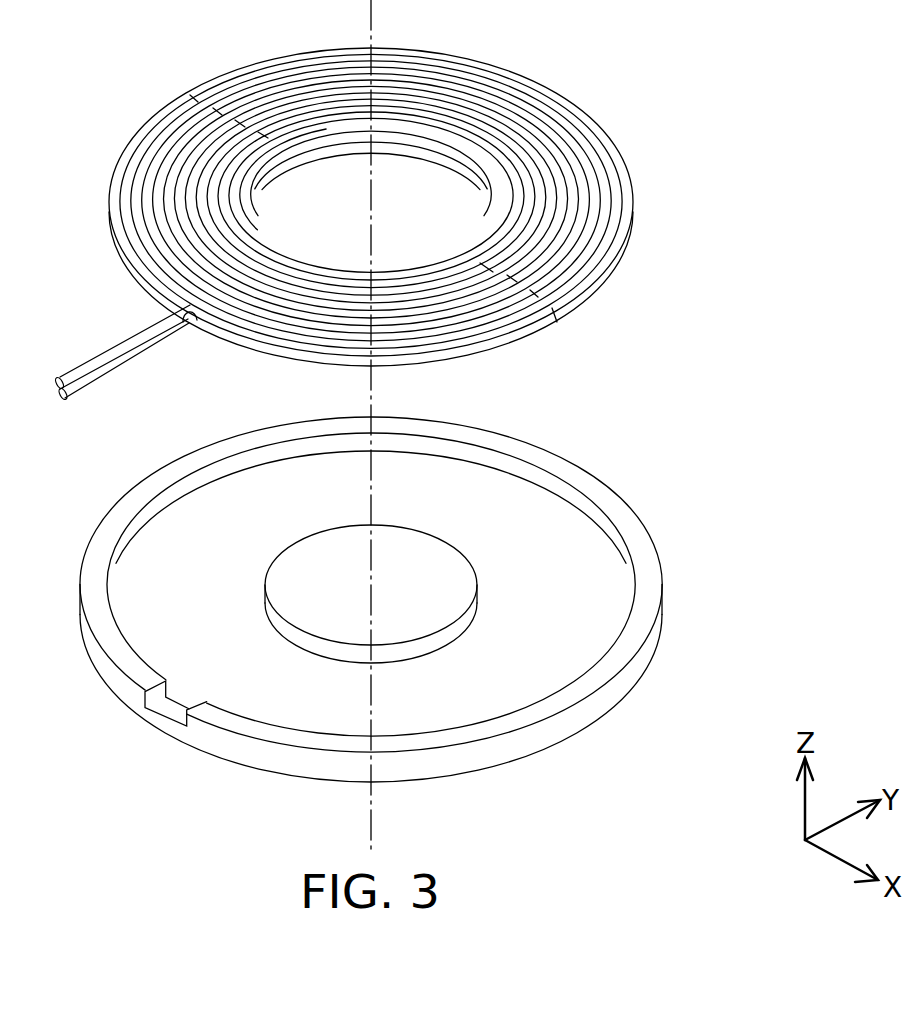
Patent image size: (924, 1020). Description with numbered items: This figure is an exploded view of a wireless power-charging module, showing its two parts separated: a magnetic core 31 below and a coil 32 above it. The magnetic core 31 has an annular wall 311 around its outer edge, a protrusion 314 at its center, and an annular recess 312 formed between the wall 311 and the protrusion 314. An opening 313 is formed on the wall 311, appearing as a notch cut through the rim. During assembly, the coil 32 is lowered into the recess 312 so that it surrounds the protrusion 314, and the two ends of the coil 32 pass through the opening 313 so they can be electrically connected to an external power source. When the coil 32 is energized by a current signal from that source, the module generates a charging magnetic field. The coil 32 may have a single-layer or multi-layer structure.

The magnetic core 31 is at (384, 585).
The coil 32 is at (588, 140).
The annular wall 311 is at (633, 533).
The annular recess 312 is at (587, 602).
The opening 313 is at (172, 713).
The protrusion 314 is at (413, 582).